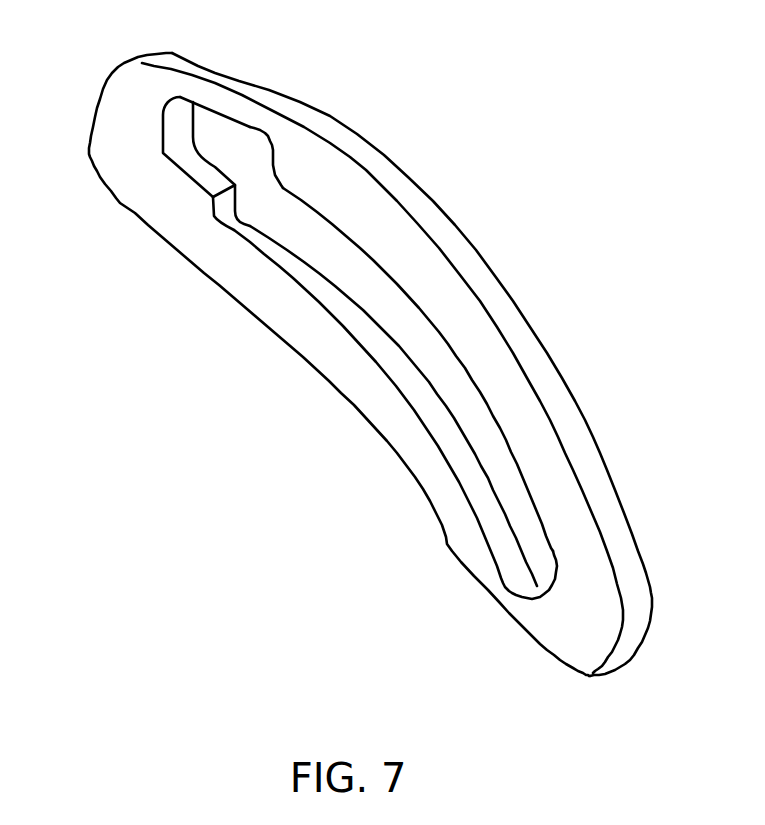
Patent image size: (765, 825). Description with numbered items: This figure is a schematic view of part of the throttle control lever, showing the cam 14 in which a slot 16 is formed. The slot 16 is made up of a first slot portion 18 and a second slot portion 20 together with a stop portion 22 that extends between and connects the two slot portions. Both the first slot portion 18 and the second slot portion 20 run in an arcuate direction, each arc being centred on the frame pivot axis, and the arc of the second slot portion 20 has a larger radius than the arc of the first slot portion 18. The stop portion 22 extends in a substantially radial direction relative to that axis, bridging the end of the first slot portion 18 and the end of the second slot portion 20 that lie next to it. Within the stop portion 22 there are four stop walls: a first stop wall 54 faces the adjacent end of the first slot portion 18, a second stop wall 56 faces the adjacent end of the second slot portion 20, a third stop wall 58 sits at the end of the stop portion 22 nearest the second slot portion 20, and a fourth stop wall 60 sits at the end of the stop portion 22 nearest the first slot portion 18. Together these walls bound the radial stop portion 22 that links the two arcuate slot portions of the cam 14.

The cam 14 is at (539, 341).
The slot 16 is at (418, 346).
The first slot portion 18 is at (387, 303).
The second slot portion 20 is at (198, 135).
The stop portion 22 is at (252, 178).
The first stop wall 54 is at (224, 204).
The second stop wall 56 is at (271, 149).
The third stop wall 58 is at (252, 128).
The fourth stop wall 60 is at (235, 228).